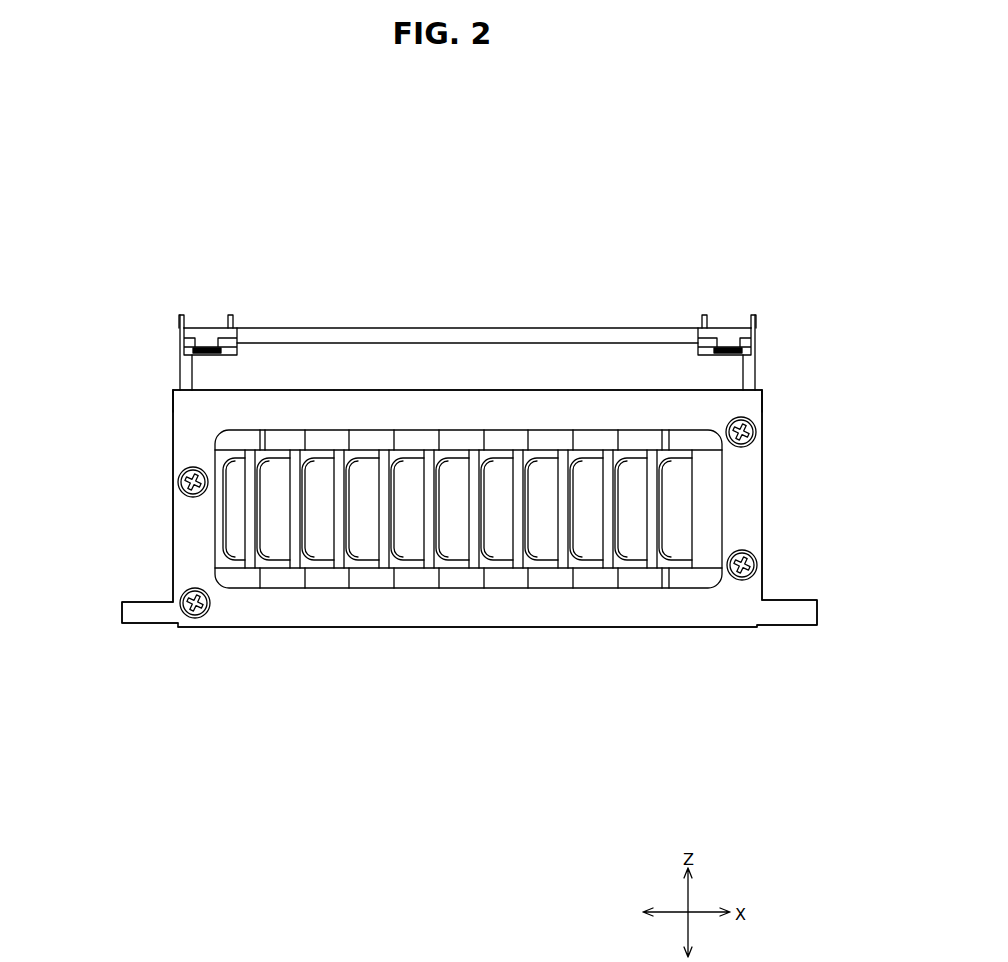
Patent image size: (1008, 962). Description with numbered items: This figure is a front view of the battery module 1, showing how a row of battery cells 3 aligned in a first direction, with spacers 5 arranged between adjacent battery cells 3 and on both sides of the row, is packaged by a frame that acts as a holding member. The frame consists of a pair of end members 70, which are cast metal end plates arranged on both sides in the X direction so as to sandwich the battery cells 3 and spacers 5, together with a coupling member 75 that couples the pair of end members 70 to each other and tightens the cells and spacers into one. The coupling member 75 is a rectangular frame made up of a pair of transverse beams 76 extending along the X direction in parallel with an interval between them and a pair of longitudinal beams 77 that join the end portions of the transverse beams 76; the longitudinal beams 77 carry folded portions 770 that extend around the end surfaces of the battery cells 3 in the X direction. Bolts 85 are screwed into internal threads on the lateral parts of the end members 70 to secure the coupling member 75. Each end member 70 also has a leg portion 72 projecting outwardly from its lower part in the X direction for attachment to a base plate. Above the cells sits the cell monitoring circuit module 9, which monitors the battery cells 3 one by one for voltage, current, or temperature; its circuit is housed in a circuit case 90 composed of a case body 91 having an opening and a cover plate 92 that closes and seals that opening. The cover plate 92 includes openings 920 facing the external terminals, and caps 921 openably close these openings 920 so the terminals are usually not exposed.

The battery module 1 is at (782, 235).
The battery cell 3 is at (233, 576).
The spacer 5 is at (243, 582).
The cell monitoring circuit module 9 is at (442, 285).
The circuit case 90 is at (430, 238).
The case body 91 is at (385, 365).
The cover plate 92 is at (413, 330).
The opening 920 is at (157, 334).
The cap 921 is at (205, 333).
The end member 70 is at (156, 526).
The leg portion 72 is at (133, 618).
The coupling member 75 is at (459, 647).
The transverse beam 76 is at (505, 412).
The longitudinal beam 77 is at (197, 435).
The folded portion 770 is at (175, 408).
The bolt 85 is at (178, 468).